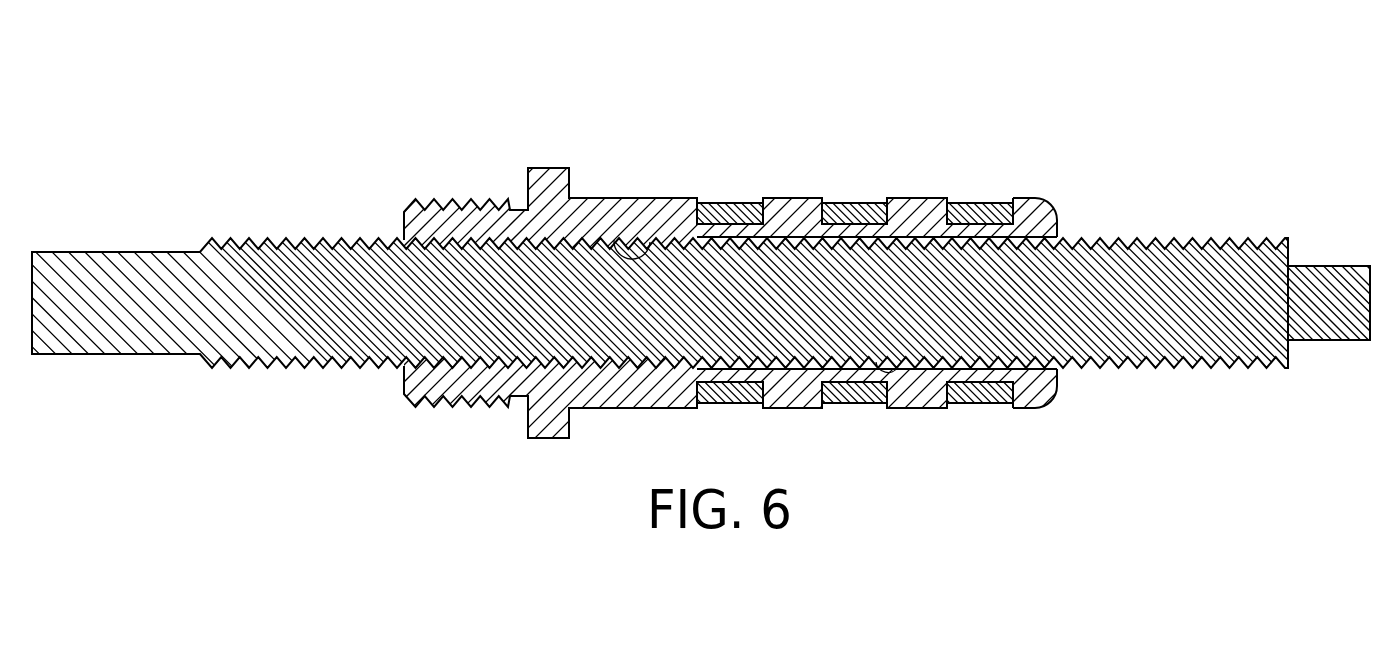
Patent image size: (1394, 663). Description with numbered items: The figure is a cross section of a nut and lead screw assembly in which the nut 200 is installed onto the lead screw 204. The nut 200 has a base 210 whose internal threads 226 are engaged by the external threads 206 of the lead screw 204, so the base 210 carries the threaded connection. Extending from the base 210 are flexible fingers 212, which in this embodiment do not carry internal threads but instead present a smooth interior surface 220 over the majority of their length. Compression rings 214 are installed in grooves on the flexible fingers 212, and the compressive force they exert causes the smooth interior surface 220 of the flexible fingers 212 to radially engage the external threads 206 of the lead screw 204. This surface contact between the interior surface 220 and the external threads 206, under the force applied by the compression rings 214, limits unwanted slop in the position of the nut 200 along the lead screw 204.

The nut 200 is at (303, 143).
The lead screw 204 is at (1337, 266).
The external threads 206 is at (1207, 238).
The base 210 is at (548, 168).
The flexible fingers 212 is at (1047, 212).
The compression rings 214 is at (733, 200).
The smooth interior surface 220 is at (898, 367).
The internal threads 226 is at (650, 242).